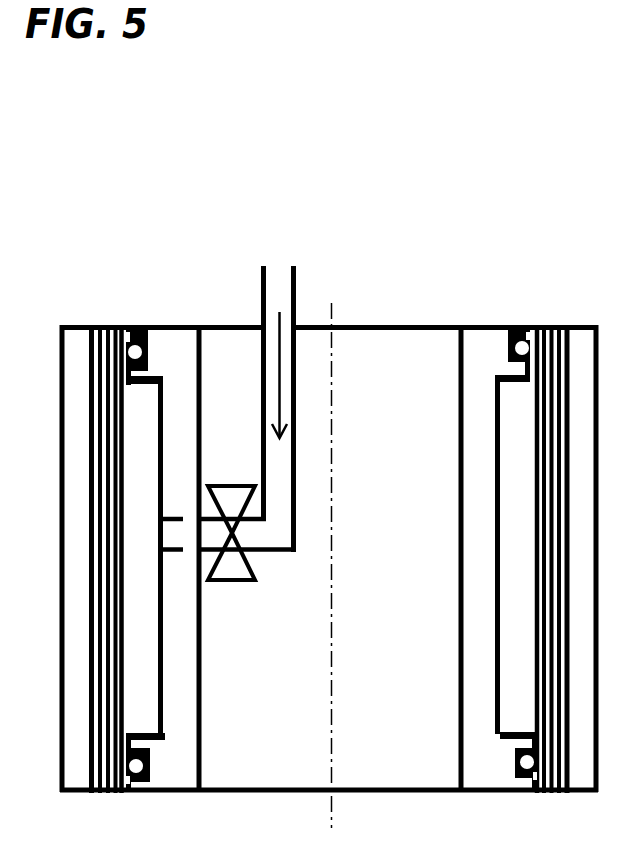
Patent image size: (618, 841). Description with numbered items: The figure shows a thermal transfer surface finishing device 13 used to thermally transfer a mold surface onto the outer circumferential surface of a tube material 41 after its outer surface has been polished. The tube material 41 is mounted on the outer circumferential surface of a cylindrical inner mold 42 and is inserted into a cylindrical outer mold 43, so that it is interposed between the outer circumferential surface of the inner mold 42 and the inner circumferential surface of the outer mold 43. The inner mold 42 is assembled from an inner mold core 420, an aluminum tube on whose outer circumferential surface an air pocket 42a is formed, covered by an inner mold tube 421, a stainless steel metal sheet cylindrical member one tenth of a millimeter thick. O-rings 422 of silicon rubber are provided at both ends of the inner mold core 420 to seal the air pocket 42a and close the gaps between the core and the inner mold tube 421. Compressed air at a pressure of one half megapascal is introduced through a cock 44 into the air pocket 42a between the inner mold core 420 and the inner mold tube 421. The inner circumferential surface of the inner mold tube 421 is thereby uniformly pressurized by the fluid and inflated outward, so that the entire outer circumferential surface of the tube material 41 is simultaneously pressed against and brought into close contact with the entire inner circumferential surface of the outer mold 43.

The thermal transfer surface finishing device 13 is at (346, 297).
The tube material 41 is at (101, 326).
The inner mold 42 is at (220, 272).
The inner mold core 420 is at (183, 326).
The inner mold tube 421 is at (115, 326).
The O-rings 422 is at (136, 345).
The air pocket 42a is at (150, 661).
The outer mold 43 is at (77, 326).
The cock 44 is at (237, 568).